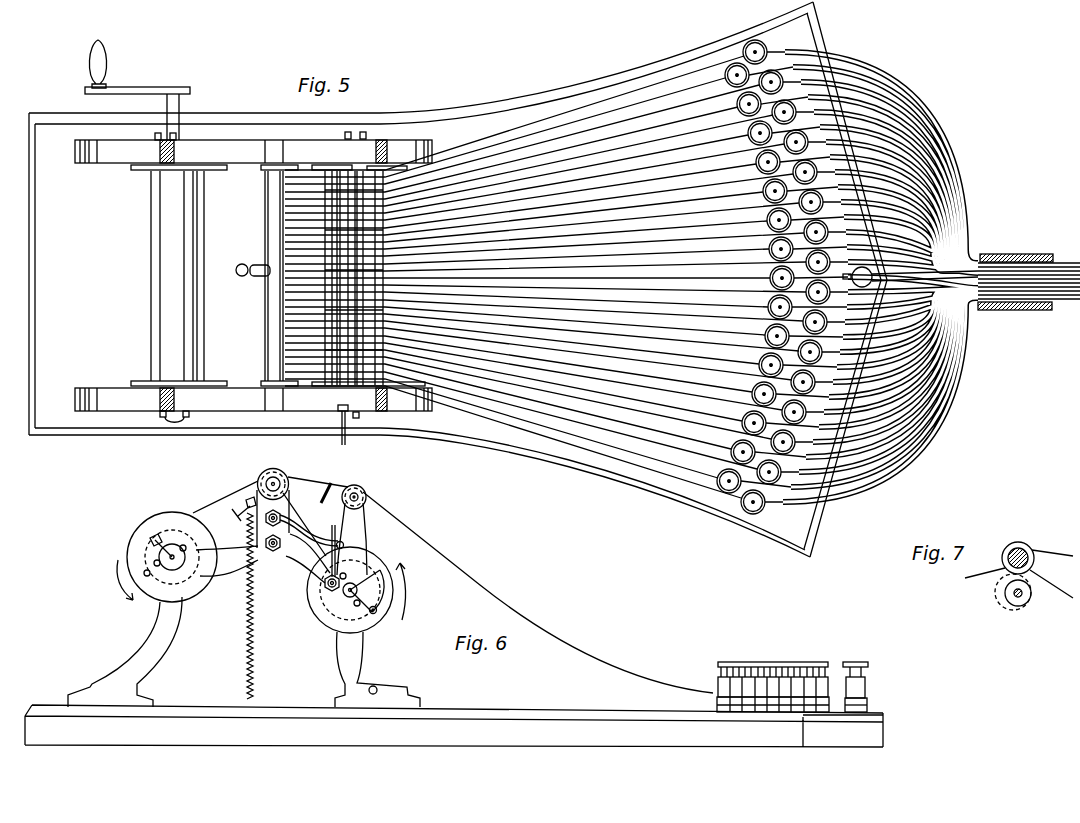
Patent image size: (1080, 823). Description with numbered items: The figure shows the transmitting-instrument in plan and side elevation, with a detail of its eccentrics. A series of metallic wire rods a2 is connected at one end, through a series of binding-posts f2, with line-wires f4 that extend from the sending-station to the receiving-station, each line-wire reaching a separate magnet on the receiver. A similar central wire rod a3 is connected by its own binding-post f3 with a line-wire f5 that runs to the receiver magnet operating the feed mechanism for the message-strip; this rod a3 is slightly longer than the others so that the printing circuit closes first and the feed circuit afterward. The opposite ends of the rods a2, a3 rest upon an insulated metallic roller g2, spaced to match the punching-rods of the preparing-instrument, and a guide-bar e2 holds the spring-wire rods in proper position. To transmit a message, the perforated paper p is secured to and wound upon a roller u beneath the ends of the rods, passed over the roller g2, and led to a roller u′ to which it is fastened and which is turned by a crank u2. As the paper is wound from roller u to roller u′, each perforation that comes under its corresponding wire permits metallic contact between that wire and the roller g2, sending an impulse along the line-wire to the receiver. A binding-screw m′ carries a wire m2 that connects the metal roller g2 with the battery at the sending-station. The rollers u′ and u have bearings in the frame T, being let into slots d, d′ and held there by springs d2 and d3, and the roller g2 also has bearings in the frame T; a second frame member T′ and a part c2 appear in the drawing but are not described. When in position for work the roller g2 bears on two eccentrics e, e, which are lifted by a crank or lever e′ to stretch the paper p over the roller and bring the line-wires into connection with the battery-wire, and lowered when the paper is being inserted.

In FIG. 5, the crank u2 is at (137, 90).
In FIG. 5, the cross beam T′ is at (253, 275).
In FIG. 5, the slot d′ is at (156, 275).
In FIG. 5, the slot d is at (372, 275).
In FIG. 6, the slot d is at (363, 588).
In FIG. 5, the spring d3 is at (184, 277).
In FIG. 6, the spring d3 is at (154, 559).
In FIG. 5, the spring d2 is at (405, 411).
In FIG. 6, the spring d2 is at (390, 618).
In FIG. 5, the pin c2 is at (334, 418).
In FIG. 5, the roller u′ is at (177, 276).
In FIG. 6, the roller u′ is at (167, 557).
In FIG. 5, the insulated metallic roller g2 is at (263, 333).
In FIG. 6, the insulated metallic roller g2 is at (262, 477).
In FIG. 7, the insulated metallic roller g2 is at (1021, 548).
In FIG. 5, the binding-screw m′ is at (252, 258).
In FIG. 6, the binding-screw m′ is at (236, 509).
In FIG. 5, the roller u is at (381, 284).
In FIG. 6, the roller u is at (356, 590).
In FIG. 5, the wire rod a3 is at (262, 290).
In FIG. 5, the wire rods a2 is at (545, 277).
In FIG. 6, the wire rods a2 is at (500, 577).
In FIG. 7, the wire rods a2 is at (1055, 549).
In FIG. 5, the binding-posts f2 is at (782, 291).
In FIG. 6, the binding-posts f2 is at (763, 682).
In FIG. 5, the line-wires f4 is at (880, 277).
In FIG. 5, the binding-post f3 is at (857, 277).
In FIG. 6, the binding-post f3 is at (865, 687).
In FIG. 5, the line-wire f5 is at (976, 287).
In FIG. 6, the frame T is at (244, 620).
In FIG. 6, the guide-bar e2 is at (344, 529).
In FIG. 6, the eccentrics e is at (312, 532).
In FIG. 7, the eccentrics e is at (1011, 592).
In FIG. 6, the crank or lever e′ is at (318, 558).
In FIG. 6, the wire m2 is at (266, 606).
In FIG. 6, the perforated paper p is at (259, 518).
In FIG. 7, the perforated paper p is at (1012, 592).